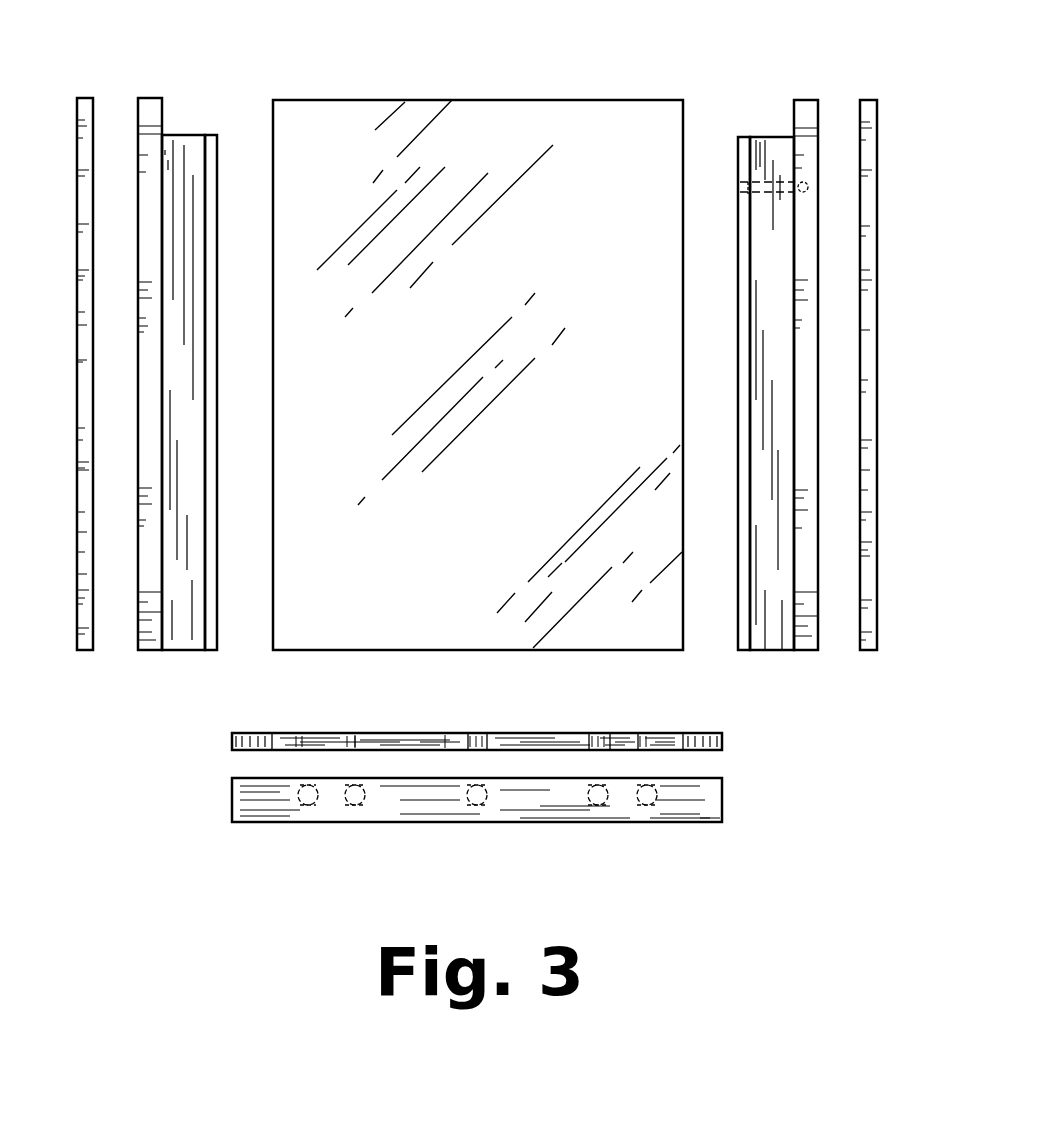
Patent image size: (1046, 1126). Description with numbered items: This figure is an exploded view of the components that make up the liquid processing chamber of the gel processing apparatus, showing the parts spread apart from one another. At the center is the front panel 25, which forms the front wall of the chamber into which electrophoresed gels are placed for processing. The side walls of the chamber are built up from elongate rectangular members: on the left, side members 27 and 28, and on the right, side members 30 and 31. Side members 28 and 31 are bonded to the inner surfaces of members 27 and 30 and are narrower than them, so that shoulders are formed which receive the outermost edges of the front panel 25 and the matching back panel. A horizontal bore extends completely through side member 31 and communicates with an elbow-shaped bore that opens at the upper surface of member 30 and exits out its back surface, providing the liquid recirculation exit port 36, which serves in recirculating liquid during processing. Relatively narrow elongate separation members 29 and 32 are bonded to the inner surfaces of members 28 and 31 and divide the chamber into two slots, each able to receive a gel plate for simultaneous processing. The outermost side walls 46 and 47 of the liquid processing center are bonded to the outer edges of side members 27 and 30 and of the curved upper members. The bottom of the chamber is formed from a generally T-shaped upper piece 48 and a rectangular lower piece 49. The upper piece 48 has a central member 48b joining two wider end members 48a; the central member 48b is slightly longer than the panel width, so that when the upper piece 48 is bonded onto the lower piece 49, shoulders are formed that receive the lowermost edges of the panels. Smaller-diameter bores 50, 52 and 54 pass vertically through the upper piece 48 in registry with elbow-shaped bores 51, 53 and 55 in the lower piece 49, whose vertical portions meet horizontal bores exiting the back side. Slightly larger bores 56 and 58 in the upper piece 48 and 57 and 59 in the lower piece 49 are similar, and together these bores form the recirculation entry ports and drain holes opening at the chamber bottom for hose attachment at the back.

The front panel 25 is at (545, 100).
The side member 27 is at (146, 98).
The side member 28 is at (178, 135).
The separation member 29 is at (211, 135).
The side member 30 is at (806, 100).
The side member 31 is at (777, 137).
The separation member 32 is at (742, 137).
The liquid recirculation exit port 36 is at (745, 195).
The side wall 46 is at (86, 98).
The side wall 47 is at (869, 100).
The upper piece 48 is at (464, 726).
The end member 48a is at (232, 740).
The central member 48b is at (445, 732).
The lower piece 49 is at (498, 827).
The bore 50 is at (300, 733).
The elbow-shaped bore 51 is at (304, 795).
The bore 52 is at (478, 733).
The elbow-shaped bore 53 is at (478, 805).
The bore 54 is at (650, 733).
The elbow-shaped bore 55 is at (648, 805).
The bore 56 is at (356, 733).
The bore 57 is at (355, 800).
The bore 58 is at (595, 733).
The bore 59 is at (599, 805).